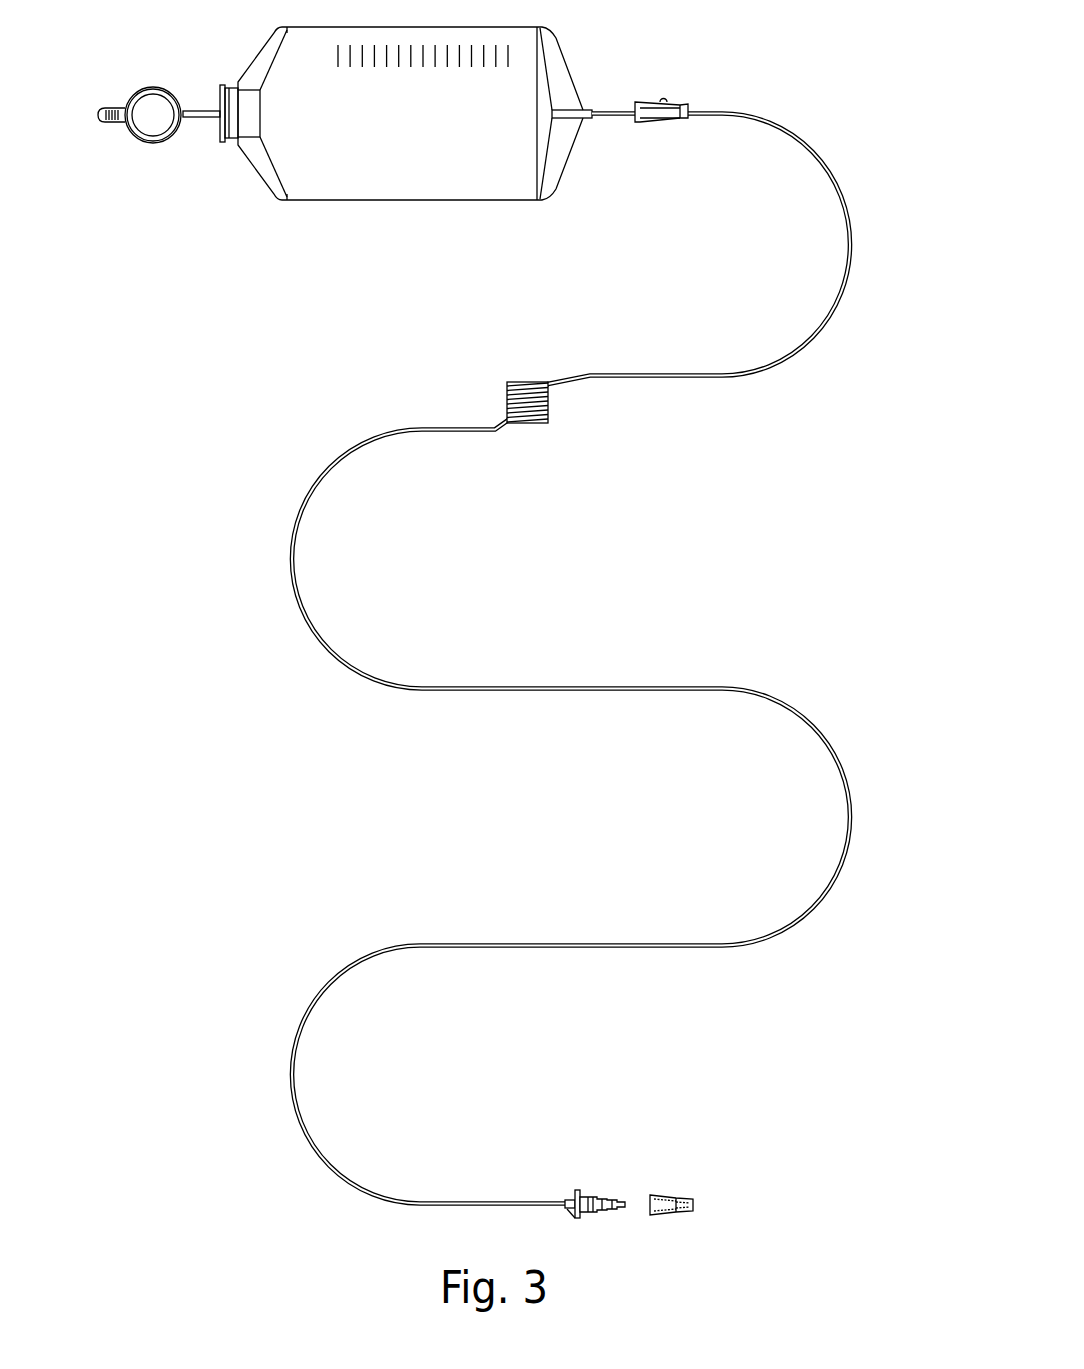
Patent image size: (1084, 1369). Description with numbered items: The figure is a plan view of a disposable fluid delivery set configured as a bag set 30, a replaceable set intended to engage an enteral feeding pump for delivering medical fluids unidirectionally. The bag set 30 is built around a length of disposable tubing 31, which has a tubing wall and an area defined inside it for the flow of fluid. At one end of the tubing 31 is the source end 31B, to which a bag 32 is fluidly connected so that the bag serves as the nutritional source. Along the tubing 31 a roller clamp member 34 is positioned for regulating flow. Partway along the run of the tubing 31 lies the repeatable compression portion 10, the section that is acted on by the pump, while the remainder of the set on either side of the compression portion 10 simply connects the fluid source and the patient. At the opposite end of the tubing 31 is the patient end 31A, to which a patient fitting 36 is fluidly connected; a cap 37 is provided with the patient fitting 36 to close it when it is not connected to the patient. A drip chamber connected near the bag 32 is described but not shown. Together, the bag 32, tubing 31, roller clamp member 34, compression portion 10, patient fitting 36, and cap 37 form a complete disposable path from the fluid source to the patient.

The bag set 30 is at (193, 743).
The bag 32 is at (318, 202).
The disposable tubing 31 is at (365, 680).
The patient end 31A is at (480, 1202).
The source end 31B is at (603, 117).
The roller clamp member 34 is at (673, 120).
The compression portion 10 is at (545, 433).
The patient fitting 36 is at (610, 1198).
The cap 37 is at (677, 1198).